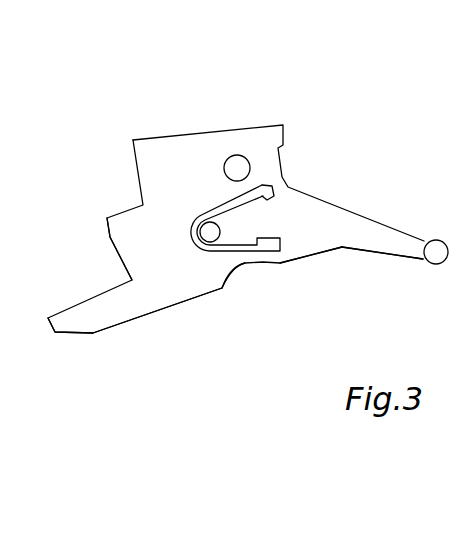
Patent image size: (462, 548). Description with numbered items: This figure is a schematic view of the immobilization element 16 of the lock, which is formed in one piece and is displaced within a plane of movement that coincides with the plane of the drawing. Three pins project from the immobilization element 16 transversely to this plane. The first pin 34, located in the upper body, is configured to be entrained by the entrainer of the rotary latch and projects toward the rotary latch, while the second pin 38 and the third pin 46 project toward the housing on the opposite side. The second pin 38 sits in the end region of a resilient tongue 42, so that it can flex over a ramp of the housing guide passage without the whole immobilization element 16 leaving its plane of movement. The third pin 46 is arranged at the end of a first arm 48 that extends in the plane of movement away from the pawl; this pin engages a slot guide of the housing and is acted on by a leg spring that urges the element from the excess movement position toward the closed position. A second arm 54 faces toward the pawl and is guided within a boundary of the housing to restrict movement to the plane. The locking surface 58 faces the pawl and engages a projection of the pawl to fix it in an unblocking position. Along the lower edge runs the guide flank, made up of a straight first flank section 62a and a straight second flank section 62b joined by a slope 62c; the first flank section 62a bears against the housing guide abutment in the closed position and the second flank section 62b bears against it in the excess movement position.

The immobilization element 16 is at (323, 105).
The first pin 34 is at (233, 165).
The second pin 38 is at (212, 231).
The resilient tongue 42 is at (252, 223).
The third pin 46 is at (436, 252).
The first arm 48 is at (373, 235).
The second arm 54 is at (112, 305).
The locking surface 58 is at (108, 242).
The first flank section 62a is at (198, 297).
The second flank section 62b is at (295, 255).
The slope 62c is at (231, 273).